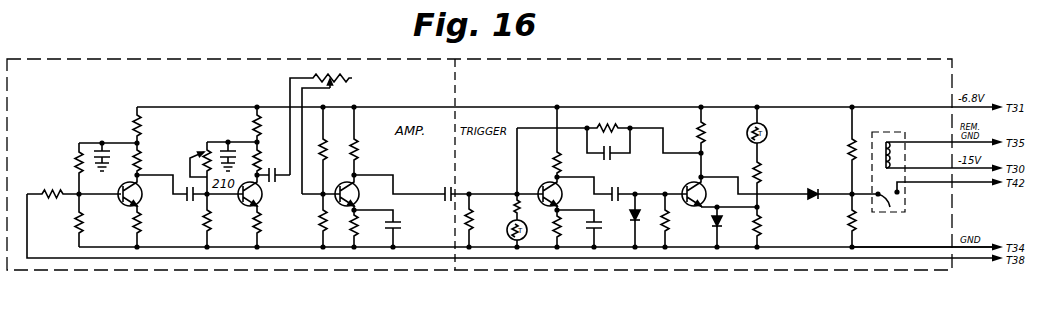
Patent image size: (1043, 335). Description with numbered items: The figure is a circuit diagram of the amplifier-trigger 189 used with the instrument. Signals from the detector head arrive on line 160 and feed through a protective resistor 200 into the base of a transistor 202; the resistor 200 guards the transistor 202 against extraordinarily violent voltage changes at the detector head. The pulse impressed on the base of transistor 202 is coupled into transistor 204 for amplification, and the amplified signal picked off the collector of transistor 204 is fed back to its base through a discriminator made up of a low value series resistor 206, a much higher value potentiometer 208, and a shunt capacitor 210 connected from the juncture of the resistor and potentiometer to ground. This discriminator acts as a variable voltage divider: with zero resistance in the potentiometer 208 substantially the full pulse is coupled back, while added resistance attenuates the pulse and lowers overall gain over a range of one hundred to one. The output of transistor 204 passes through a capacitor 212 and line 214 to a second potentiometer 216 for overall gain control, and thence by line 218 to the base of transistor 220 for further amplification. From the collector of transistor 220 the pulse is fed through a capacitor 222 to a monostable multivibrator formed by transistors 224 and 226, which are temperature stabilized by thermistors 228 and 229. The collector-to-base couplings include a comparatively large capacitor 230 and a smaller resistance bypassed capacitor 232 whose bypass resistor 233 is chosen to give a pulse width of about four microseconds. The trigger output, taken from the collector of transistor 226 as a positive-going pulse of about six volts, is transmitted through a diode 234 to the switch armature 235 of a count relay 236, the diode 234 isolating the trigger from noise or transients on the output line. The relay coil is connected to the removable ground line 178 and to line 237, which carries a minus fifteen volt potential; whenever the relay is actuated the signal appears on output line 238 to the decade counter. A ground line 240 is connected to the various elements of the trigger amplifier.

The line 160 is at (27, 226).
The removable ground line 178 is at (941, 131).
The amplifier-trigger circuit 189 is at (156, 65).
The protective resistor 200 is at (60, 174).
The transistor 202 is at (128, 208).
The transistor 204 is at (260, 207).
The low value series resistor 206 is at (260, 162).
The potentiometer 208 is at (199, 154).
The shunt capacitor 210 is at (228, 156).
The capacitor 212 is at (281, 185).
The line 214 is at (288, 92).
The second potentiometer 216 is at (335, 78).
The line 218 is at (304, 98).
The transistor 220 is at (360, 199).
The capacitor 222 is at (441, 191).
The transistor 224 is at (550, 180).
The transistor 226 is at (689, 186).
The thermistor 228 is at (510, 224).
The thermistor 229 is at (768, 135).
The capacitor 230 is at (632, 181).
The resistance bypassed capacitor 232 is at (613, 157).
The bypass resistor 233 is at (608, 126).
The diode 234 is at (821, 190).
The switch armature 235 is at (891, 208).
The count relay 236 is at (904, 128).
The line 237 is at (938, 166).
The output line 238 is at (957, 184).
The ground line 240 is at (921, 246).